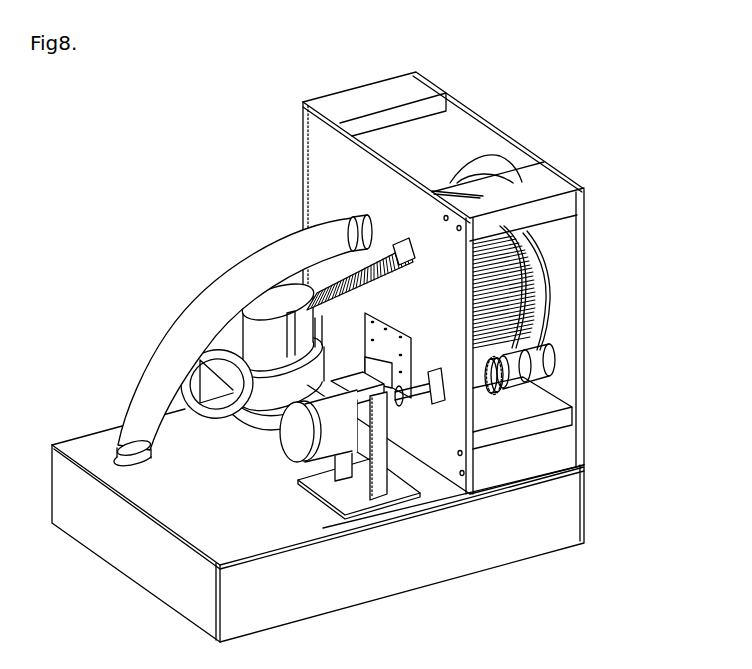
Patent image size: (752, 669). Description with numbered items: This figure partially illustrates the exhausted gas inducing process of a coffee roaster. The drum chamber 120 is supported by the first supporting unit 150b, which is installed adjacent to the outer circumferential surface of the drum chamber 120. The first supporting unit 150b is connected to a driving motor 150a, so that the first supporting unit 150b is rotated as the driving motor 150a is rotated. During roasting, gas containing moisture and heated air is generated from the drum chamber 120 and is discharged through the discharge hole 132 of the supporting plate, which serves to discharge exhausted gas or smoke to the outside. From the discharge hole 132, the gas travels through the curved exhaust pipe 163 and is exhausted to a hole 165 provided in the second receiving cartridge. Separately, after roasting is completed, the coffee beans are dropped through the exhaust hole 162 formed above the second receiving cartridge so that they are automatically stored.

The drum chamber 120 is at (553, 287).
The discharge hole 132 is at (345, 206).
The driving motor 150a is at (294, 441).
The first supporting unit 150b is at (554, 358).
The exhaust hole 162 is at (250, 423).
The exhaust pipe 163 is at (230, 290).
The hole 165 is at (110, 452).